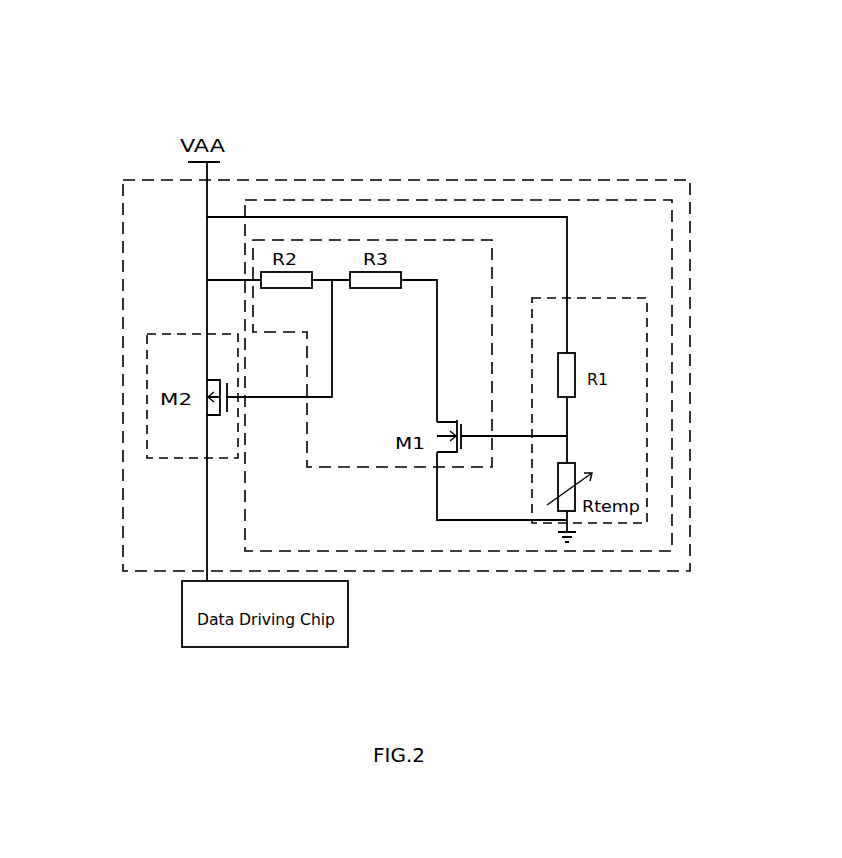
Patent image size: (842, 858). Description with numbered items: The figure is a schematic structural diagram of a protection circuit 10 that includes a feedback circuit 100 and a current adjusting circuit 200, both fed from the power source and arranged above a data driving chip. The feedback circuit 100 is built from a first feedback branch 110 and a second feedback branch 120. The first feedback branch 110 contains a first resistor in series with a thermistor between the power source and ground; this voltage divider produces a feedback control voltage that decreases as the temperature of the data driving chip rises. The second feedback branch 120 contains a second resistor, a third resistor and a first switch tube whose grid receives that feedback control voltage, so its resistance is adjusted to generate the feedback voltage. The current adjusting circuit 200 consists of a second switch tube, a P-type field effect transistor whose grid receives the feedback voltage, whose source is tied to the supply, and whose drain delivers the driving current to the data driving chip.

The protection circuit 10 is at (313, 178).
The feedback circuit 100 is at (513, 200).
The first feedback branch 110 is at (383, 238).
The second feedback branch 120 is at (640, 408).
The current adjusting circuit 200 is at (150, 336).